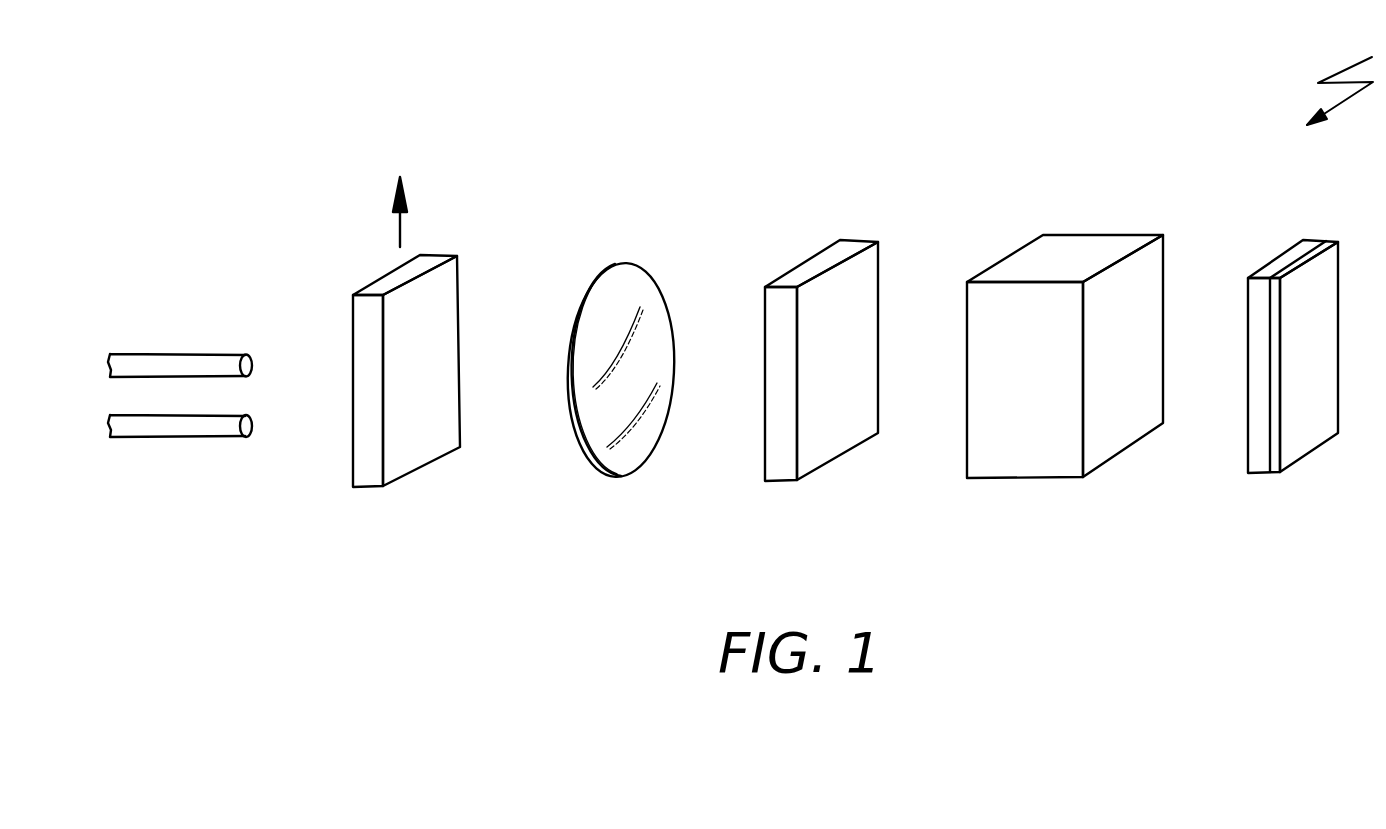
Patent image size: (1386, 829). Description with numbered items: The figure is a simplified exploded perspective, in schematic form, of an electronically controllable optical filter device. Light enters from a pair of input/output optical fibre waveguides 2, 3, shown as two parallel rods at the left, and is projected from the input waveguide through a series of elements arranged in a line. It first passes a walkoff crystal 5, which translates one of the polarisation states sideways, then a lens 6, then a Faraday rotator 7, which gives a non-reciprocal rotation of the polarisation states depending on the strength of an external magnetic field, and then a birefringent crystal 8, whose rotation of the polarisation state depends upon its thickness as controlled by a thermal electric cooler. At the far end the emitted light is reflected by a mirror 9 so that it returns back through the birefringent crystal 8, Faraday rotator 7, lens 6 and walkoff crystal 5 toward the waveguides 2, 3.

The input/output optical fibre waveguide 2 is at (205, 437).
The input/output optical fibre waveguide 3 is at (205, 354).
The walkoff crystal 5 is at (375, 487).
The lens 6 is at (617, 480).
The Faraday rotator 7 is at (787, 481).
The birefringent crystal 8 is at (1013, 478).
The mirror 9 is at (1262, 474).